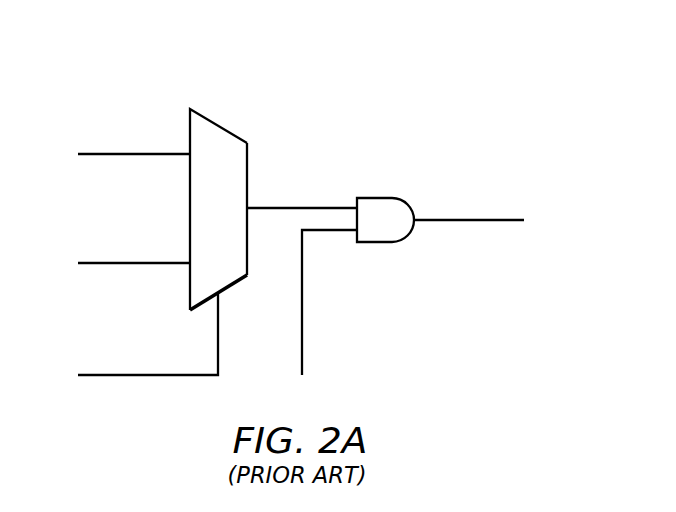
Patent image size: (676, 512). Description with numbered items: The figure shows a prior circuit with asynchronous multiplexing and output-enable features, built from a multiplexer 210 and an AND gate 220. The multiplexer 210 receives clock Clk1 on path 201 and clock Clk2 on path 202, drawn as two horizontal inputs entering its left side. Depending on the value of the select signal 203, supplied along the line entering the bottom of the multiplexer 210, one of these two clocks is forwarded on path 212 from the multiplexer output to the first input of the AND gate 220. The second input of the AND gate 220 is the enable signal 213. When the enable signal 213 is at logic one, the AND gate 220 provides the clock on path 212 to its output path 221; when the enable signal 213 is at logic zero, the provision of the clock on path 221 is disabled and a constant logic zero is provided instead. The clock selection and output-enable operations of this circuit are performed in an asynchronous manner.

The first clock input (CLK1) 201 is at (135, 153).
The second clock input (CLK2) 202 is at (135, 262).
The multiplexer select input 203 is at (150, 376).
The multiplexer 210 is at (229, 132).
The multiplexer output / AND gate input 212 is at (312, 207).
The AND gate enable input 213 is at (302, 299).
The AND gate 220 is at (384, 197).
The gated clock output 221 is at (468, 219).